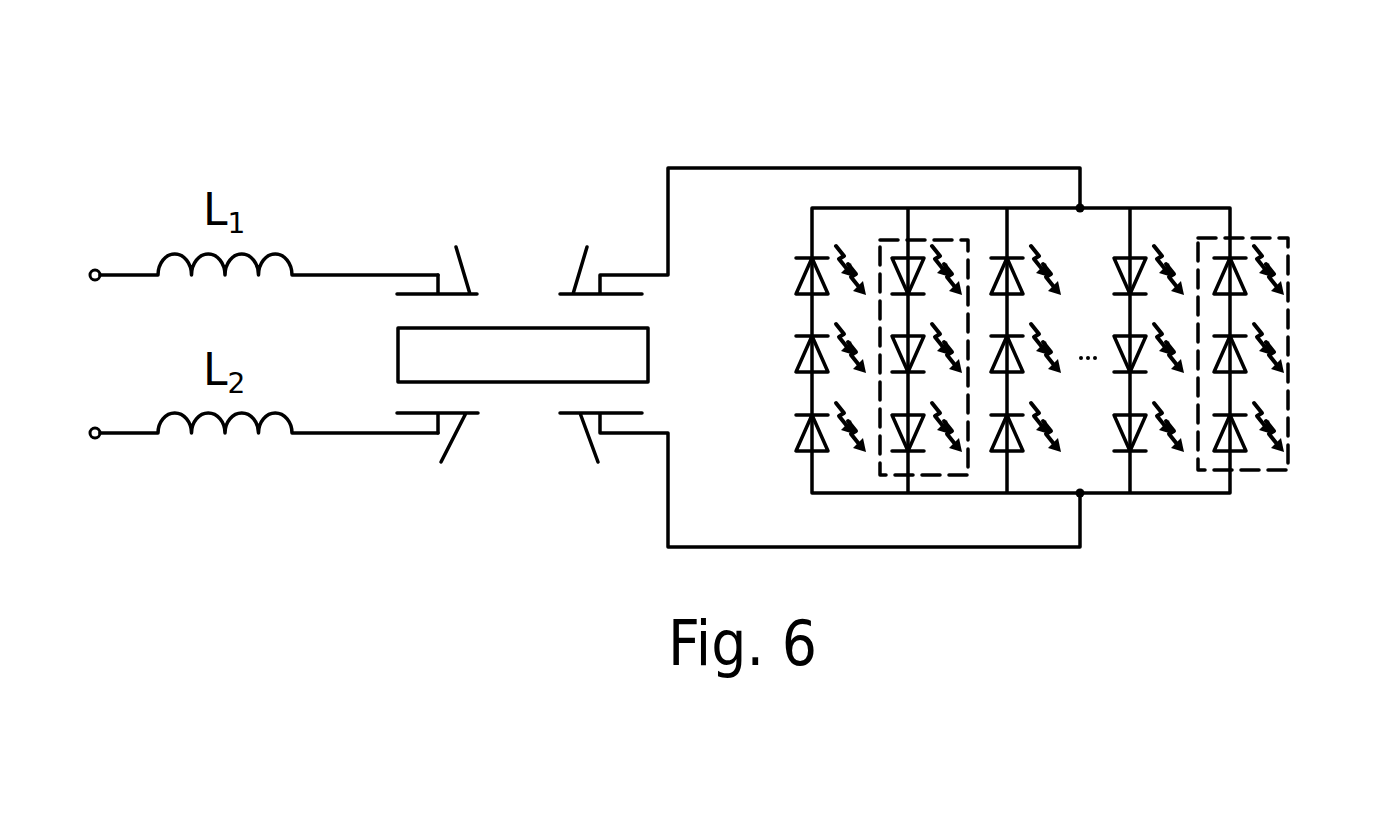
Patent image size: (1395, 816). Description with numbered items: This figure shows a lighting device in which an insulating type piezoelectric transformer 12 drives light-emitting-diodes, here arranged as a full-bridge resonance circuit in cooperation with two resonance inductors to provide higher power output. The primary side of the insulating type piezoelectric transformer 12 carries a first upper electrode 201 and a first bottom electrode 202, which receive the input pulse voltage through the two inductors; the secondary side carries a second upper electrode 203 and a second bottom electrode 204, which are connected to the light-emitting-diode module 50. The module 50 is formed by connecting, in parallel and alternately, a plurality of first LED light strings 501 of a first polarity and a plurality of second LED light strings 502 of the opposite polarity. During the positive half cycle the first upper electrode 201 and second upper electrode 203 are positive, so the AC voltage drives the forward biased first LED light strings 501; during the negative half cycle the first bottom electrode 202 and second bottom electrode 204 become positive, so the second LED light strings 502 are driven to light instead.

The insulating type piezoelectric transformer 12 is at (515, 270).
The first upper electrode 201 is at (456, 247).
The first bottom electrode 202 is at (441, 462).
The second upper electrode 203 is at (587, 247).
The second bottom electrode 204 is at (598, 462).
The light-emitting-diode module 50 is at (1126, 152).
The first LED light string 501 is at (928, 238).
The second LED light string 502 is at (1248, 232).